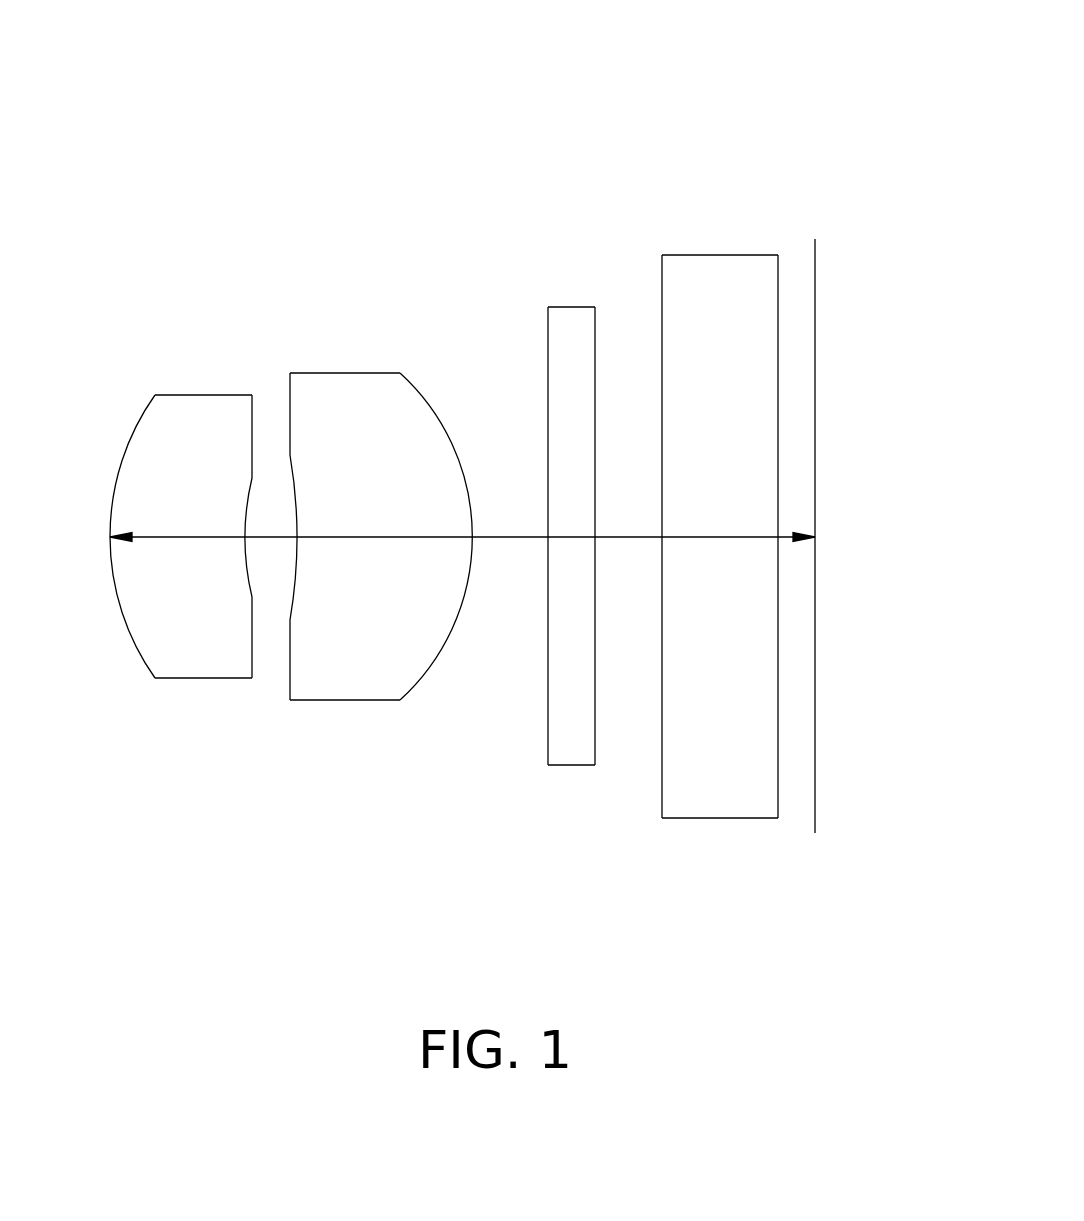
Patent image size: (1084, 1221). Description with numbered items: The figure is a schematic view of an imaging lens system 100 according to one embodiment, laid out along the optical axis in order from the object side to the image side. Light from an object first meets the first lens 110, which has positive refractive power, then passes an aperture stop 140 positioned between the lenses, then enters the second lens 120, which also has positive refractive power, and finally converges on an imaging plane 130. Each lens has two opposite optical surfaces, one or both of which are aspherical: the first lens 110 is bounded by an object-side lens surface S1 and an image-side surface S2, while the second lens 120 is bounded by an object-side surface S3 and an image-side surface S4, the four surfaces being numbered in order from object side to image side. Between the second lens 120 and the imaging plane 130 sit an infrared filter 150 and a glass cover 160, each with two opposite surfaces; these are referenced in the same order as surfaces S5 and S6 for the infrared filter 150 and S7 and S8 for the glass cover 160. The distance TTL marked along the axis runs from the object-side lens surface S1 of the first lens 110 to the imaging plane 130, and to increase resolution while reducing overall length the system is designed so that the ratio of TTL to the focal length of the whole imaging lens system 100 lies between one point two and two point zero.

The imaging lens system 100 is at (423, 60).
The first lens 110 is at (160, 582).
The second lens 120 is at (377, 539).
The imaging plane 130 is at (814, 279).
The aperture stop 140 is at (263, 483).
The infrared filter 150 is at (556, 539).
The glass cover 160 is at (729, 591).
The object-side lens surface of the first lens S1 is at (127, 628).
The image-side surface of the first lens S2 is at (248, 582).
The object-side surface of the second lens S3 is at (289, 372).
The image-side surface of the second lens S4 is at (436, 565).
The object-side surface of the infrared filter S5 is at (547, 373).
The image-side surface of the infrared filter S6 is at (613, 485).
The object-side surface of the glass cover S7 is at (662, 797).
The image-side surface of the glass cover S8 is at (800, 591).
The total track length TTL is at (462, 522).